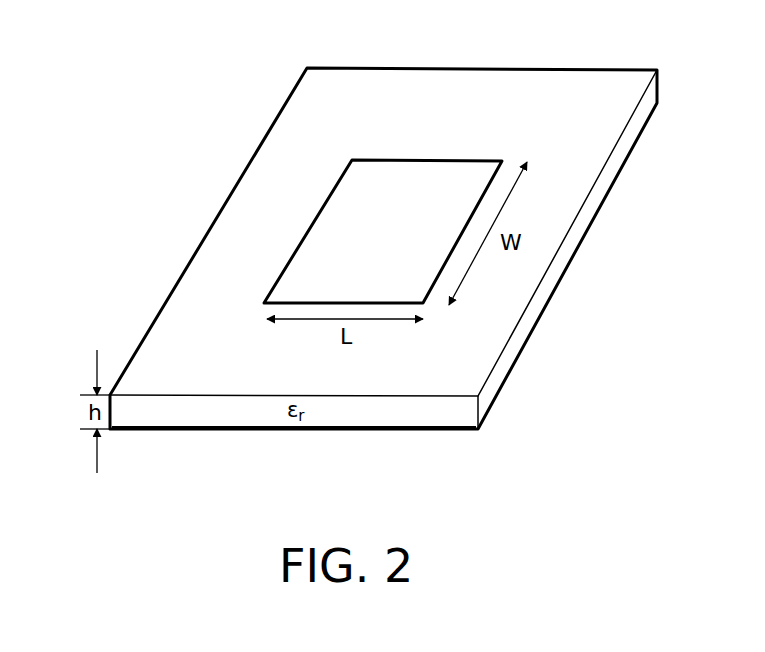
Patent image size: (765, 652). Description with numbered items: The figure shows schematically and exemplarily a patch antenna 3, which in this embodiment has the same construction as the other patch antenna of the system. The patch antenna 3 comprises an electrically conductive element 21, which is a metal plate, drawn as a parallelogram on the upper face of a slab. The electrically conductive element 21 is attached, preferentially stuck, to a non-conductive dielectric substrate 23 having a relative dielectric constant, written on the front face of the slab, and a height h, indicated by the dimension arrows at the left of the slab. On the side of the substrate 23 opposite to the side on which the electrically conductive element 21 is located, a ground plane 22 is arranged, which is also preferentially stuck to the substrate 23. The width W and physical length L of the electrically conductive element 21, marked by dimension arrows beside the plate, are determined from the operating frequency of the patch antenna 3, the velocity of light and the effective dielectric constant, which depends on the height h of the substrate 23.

The patch antenna 3 is at (383, 252).
The electrically conductive element 21 is at (347, 204).
The ground plane 22 is at (549, 302).
The substrate 23 is at (191, 415).